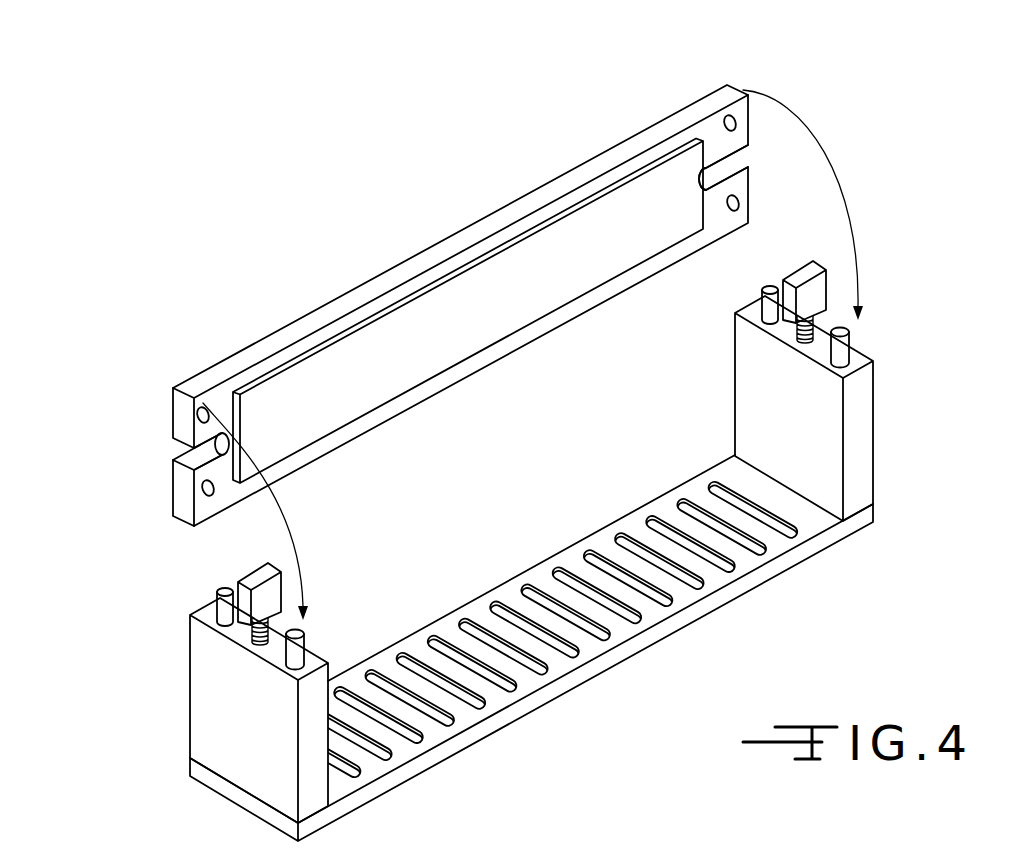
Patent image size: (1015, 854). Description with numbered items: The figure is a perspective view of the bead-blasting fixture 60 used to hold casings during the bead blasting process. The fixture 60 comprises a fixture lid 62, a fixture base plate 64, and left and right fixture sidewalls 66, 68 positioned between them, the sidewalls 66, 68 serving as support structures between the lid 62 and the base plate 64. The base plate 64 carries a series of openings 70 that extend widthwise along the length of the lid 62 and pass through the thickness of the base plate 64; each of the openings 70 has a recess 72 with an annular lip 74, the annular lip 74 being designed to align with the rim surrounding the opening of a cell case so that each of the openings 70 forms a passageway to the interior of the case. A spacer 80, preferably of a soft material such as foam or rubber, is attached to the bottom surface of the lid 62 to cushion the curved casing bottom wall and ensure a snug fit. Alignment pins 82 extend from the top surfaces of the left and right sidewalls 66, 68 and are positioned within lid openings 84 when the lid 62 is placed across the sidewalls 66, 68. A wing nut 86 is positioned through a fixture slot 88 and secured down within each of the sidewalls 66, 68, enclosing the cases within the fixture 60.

The bead-blasting fixture 60 is at (593, 126).
The fixture lid 62 is at (711, 123).
The fixture base plate 64 is at (683, 622).
The left fixture sidewall 66 is at (207, 697).
The right fixture sidewall 68 is at (877, 416).
The openings 70 is at (408, 667).
The recess 72 is at (563, 572).
The annular lip 74 is at (762, 558).
The spacer 80 is at (440, 333).
The alignment pins 82 is at (850, 339).
The lid openings 84 is at (207, 492).
The wing nut 86 is at (250, 580).
The fixture slot 88 is at (188, 458).